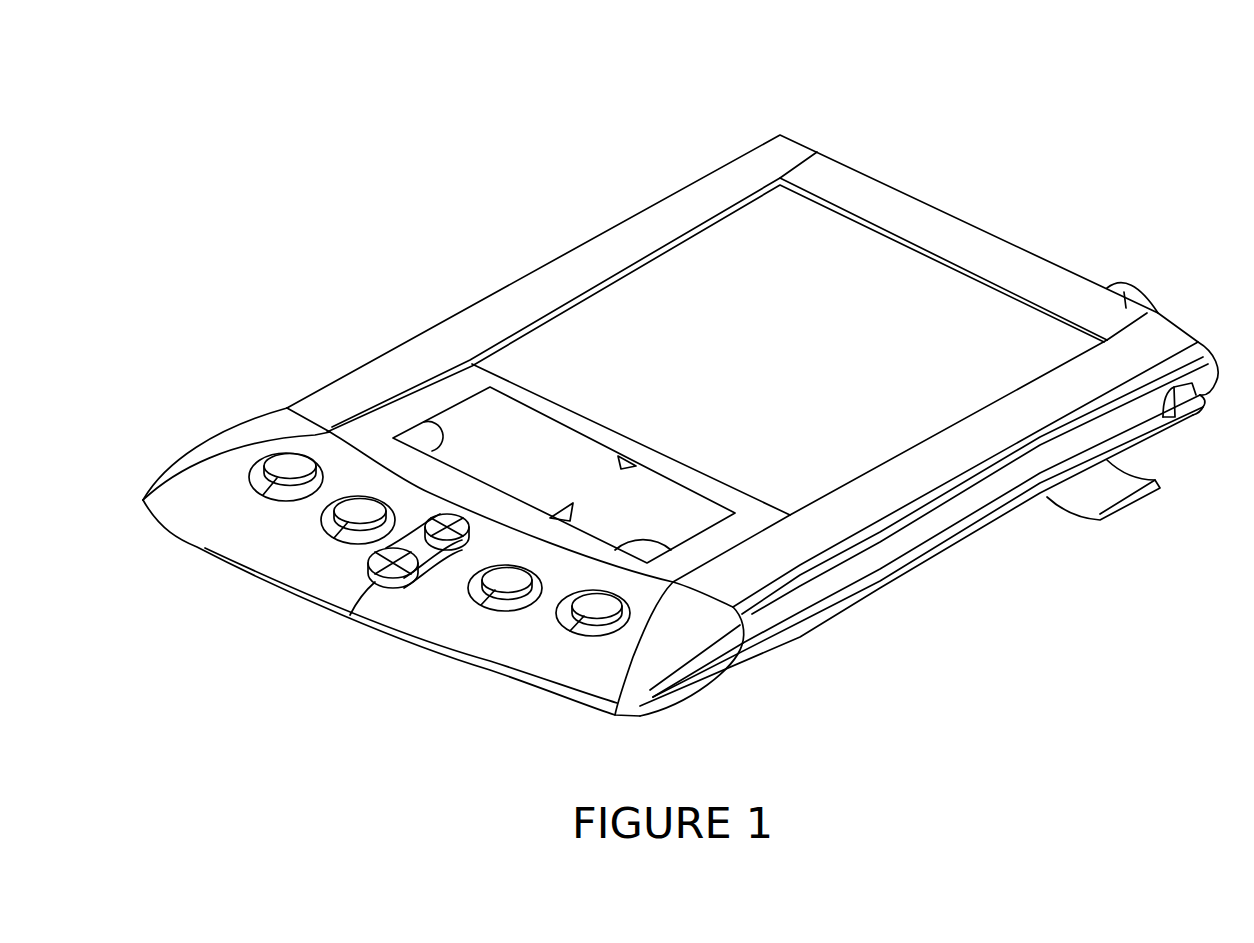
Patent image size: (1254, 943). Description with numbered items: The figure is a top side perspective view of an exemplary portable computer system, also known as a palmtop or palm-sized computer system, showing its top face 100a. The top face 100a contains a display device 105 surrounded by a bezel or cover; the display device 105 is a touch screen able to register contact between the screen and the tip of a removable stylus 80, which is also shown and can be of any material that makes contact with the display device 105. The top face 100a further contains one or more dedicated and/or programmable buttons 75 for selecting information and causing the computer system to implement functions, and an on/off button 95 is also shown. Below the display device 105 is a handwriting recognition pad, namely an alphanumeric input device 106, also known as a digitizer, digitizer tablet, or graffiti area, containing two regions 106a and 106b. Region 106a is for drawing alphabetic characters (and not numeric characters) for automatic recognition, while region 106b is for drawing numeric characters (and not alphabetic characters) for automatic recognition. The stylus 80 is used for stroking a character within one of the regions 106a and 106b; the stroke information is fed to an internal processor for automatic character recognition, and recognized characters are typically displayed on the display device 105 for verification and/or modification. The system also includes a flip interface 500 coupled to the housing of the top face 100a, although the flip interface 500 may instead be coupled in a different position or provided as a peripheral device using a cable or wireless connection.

The top face 100a is at (175, 87).
The display device 105 is at (800, 269).
The alphanumeric input device 106 is at (544, 407).
The region 106a is at (525, 459).
The region 106b is at (669, 528).
The buttons 75 is at (277, 460).
The stylus 80 is at (912, 540).
The on/off button 95 is at (1123, 288).
The flip interface 500 is at (1153, 487).